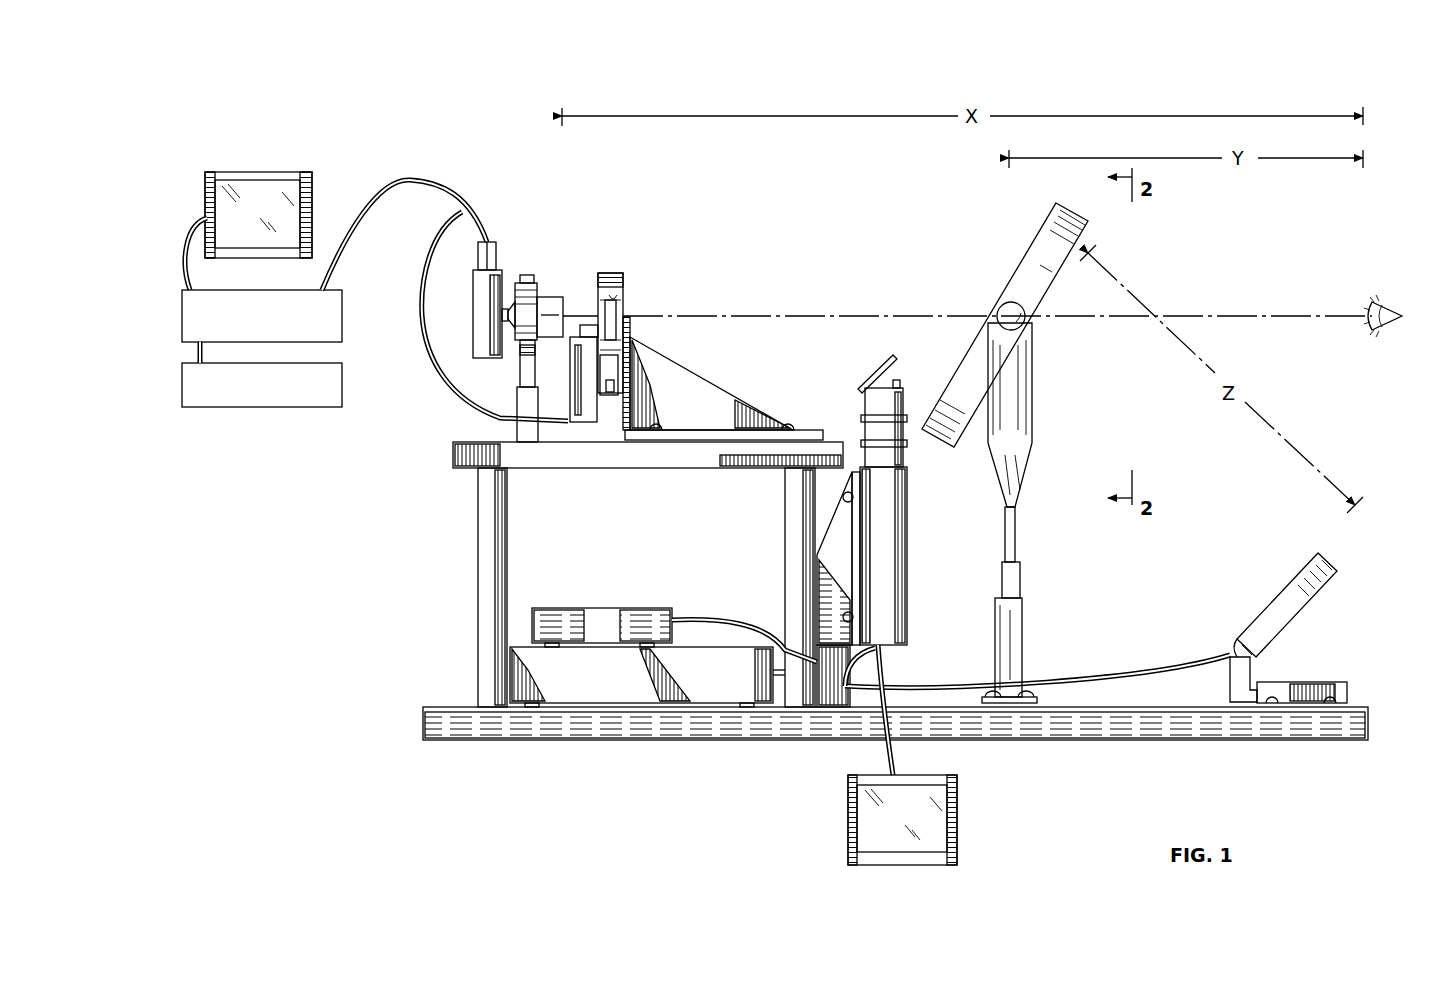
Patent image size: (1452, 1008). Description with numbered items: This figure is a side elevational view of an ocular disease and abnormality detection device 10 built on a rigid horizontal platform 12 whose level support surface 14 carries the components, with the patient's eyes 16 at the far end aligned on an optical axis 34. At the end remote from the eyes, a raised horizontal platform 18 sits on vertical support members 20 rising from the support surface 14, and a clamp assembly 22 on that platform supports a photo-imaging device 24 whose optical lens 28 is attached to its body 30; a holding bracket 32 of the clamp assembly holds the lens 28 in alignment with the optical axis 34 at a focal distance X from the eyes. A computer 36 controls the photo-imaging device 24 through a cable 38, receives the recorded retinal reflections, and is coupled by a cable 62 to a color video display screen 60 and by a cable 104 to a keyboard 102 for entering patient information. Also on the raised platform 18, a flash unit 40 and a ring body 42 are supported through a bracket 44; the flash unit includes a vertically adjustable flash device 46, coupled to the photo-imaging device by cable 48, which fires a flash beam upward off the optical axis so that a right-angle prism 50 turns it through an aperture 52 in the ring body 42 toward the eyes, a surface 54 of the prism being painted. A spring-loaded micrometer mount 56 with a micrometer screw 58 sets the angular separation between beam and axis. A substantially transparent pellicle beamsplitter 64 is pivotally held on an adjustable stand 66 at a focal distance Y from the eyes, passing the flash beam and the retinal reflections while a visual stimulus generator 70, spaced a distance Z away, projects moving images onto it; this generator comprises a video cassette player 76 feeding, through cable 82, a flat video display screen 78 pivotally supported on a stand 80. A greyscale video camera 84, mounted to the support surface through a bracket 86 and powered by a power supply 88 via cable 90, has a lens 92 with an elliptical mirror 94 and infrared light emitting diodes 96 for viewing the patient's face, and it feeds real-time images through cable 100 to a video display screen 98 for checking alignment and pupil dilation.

The ocular disease and abnormality detection device 10 is at (876, 206).
The rigid horizontal platform 12 is at (672, 740).
The level support surface 14 is at (453, 706).
The patient's eyes 16 is at (1393, 312).
The raised horizontal platform 18 is at (573, 460).
The vertical support members 20 is at (478, 545).
The clamp assembly 22 is at (548, 310).
The photo-imaging device 24 is at (455, 325).
The optical lens 28 is at (549, 297).
The body 30 is at (486, 358).
The holding bracket 32 is at (556, 310).
The optical axis 34 is at (850, 316).
The computer 36 is at (342, 312).
The cable 38 is at (408, 185).
The flash unit 40 is at (576, 428).
The ring body 42 is at (654, 313).
The bracket 44 is at (708, 418).
The flash device 46 is at (598, 424).
The cable 48 is at (440, 398).
The right-angle prism 50 is at (588, 326).
The aperture 52 is at (626, 301).
The surface 54 is at (583, 331).
The spring-loaded micrometer mount 56 is at (634, 329).
The micrometer screw 58 is at (630, 318).
The color video display screen 60 is at (255, 172).
The cable 62 is at (185, 248).
The pellicle beamsplitter 64 is at (1010, 258).
The adjustable stand 66 is at (1030, 478).
The visual stimulus generator 70 is at (1320, 655).
The video cassette player 76 is at (708, 690).
The flat video display screen 78 is at (1255, 612).
The stand 80 is at (1228, 690).
The cable 82 is at (1065, 688).
The greyscale video camera 84 is at (890, 566).
The bracket 86 is at (844, 580).
The power supply 88 is at (605, 620).
The cable 90 is at (760, 622).
The lens 92 is at (865, 400).
The elliptical mirror 94 is at (862, 385).
The infrared light emitting diodes 96 is at (900, 385).
The video display screen 98 is at (957, 806).
The cable 100 is at (889, 758).
The keyboard 102 is at (253, 408).
The cable 104 is at (196, 352).